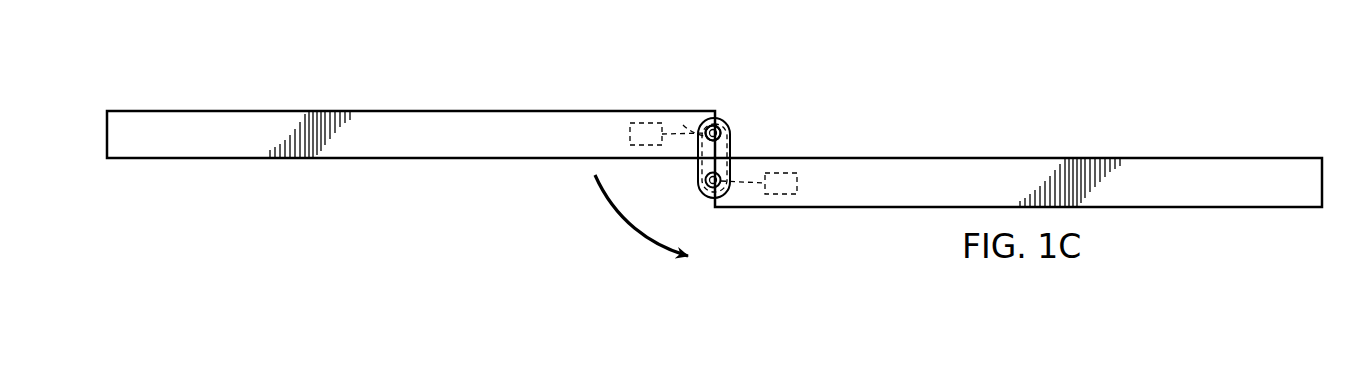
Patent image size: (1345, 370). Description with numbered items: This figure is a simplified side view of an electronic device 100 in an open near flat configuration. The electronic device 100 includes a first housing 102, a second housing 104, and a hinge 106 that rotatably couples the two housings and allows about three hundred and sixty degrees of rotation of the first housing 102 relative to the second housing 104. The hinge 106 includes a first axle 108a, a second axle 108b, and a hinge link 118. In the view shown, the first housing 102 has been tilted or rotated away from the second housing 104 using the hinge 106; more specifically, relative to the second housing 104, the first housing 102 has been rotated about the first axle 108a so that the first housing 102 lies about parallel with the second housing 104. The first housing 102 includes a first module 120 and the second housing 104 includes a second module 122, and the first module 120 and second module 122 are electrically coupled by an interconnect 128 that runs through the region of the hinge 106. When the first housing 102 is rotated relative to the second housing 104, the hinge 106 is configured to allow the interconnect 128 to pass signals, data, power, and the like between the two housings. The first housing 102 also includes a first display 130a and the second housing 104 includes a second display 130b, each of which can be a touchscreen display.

The electronic device 100 is at (584, 79).
The first housing 102 is at (207, 120).
The second housing 104 is at (1238, 167).
The hinge 106 is at (797, 88).
The first axle 108a is at (722, 131).
The second axle 108b is at (703, 182).
The hinge link 118 is at (720, 126).
The first module 120 is at (646, 122).
The second module 122 is at (781, 196).
The interconnect 128 is at (683, 125).
The first display 130a is at (358, 84).
The second display 130b is at (1069, 129).